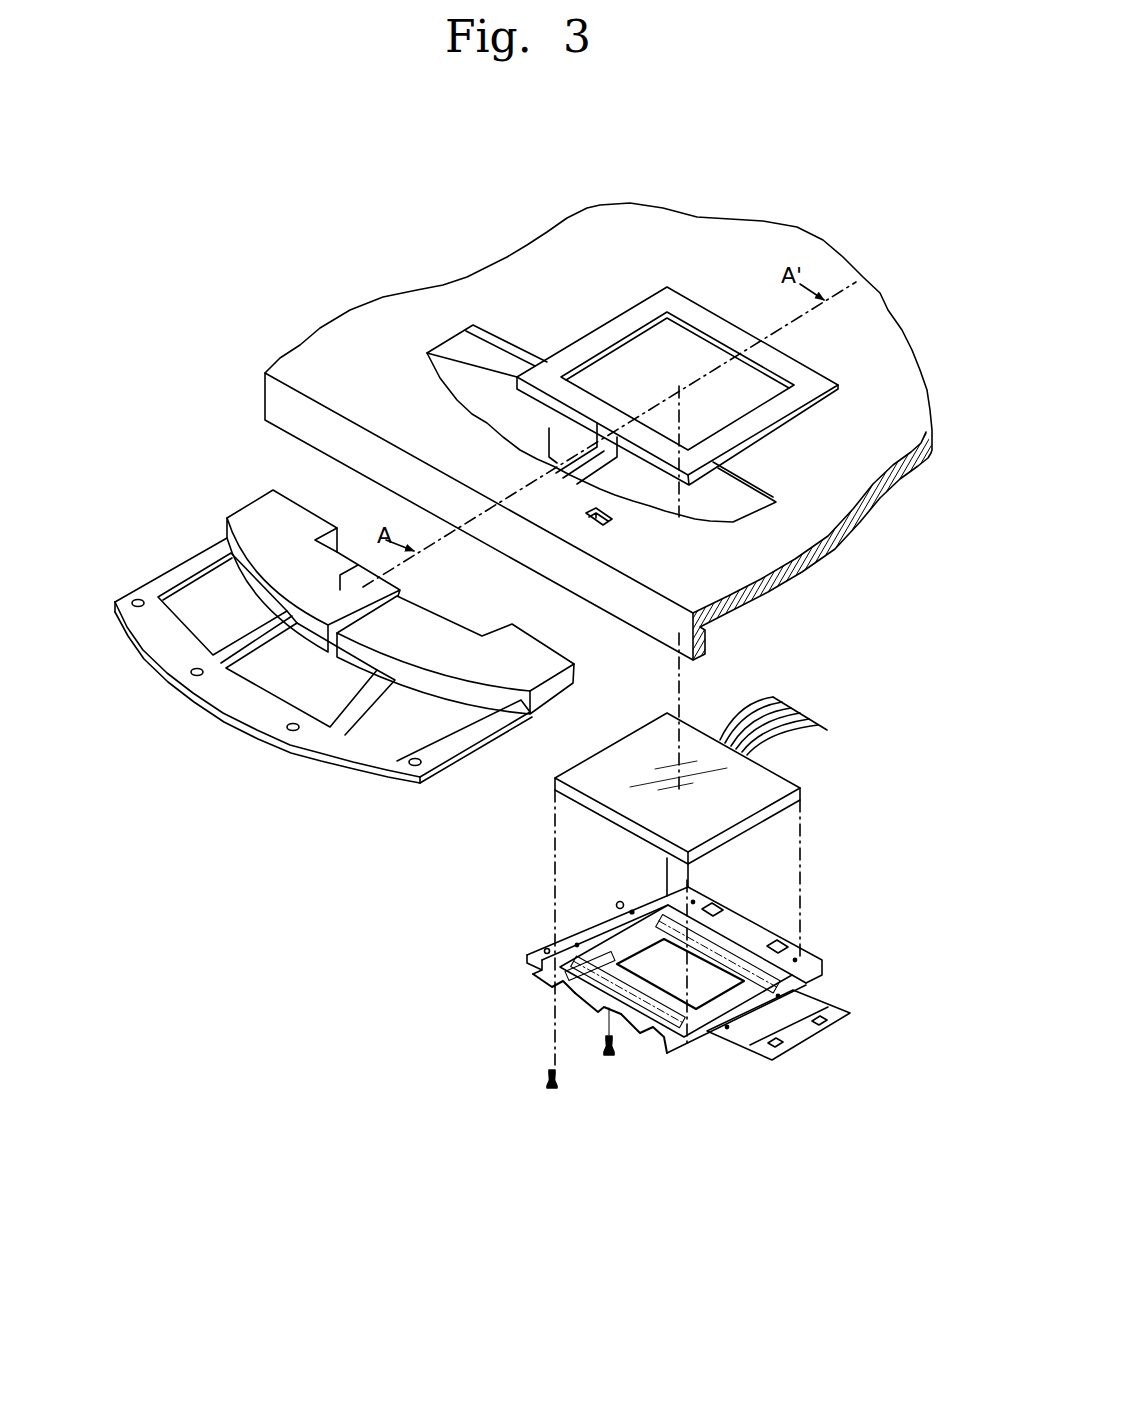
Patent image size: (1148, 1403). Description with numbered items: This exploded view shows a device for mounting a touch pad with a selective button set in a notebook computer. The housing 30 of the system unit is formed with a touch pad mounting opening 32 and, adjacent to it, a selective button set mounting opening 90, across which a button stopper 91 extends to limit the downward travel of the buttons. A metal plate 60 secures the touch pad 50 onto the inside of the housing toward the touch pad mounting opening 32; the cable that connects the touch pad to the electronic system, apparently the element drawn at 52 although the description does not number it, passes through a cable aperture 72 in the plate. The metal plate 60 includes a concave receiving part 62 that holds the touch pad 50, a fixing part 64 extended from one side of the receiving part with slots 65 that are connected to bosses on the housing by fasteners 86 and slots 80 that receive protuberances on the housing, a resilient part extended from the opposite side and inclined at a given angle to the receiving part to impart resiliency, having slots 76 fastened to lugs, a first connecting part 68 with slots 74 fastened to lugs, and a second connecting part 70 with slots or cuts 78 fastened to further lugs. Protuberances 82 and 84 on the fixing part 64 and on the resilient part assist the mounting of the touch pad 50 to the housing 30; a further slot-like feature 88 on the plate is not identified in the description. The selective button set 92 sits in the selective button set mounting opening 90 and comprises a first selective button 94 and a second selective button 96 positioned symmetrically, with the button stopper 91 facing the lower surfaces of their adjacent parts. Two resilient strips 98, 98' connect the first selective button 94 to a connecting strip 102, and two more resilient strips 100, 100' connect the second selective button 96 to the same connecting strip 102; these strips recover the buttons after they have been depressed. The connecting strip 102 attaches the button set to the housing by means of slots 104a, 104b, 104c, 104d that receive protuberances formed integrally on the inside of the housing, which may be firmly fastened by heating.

The housing 30 is at (330, 350).
The touch pad mounting opening 32 is at (626, 356).
The selective button set mounting opening 90 is at (735, 507).
The button stopper 91 is at (600, 465).
The touch pad 50 is at (780, 786).
The flexible cable 52 is at (790, 733).
The metal plate 60 is at (847, 966).
The concave receiving part 62 is at (580, 942).
The fixing part 64 is at (527, 955).
The slots 65 is at (616, 905).
The first connecting part 68 is at (753, 933).
The second connecting part 70 is at (550, 978).
The cable aperture 72 is at (577, 1000).
The slots 74 is at (716, 905).
The slots 76 is at (828, 1023).
The slots or cuts 78 is at (643, 1036).
The slots 80 is at (631, 910).
The protuberance 82 is at (575, 945).
The protuberance 84 is at (725, 1028).
The fasteners 86 is at (552, 1090).
The slot 88 is at (792, 953).
The selective button set 92 is at (290, 780).
The first selective button 94 is at (333, 562).
The second selective button 96 is at (460, 627).
The resilient strip 98 is at (193, 548).
The resilient strip 98' is at (227, 608).
The resilient strip 100 is at (481, 741).
The resilient strip 100' is at (334, 679).
The connecting strip 102 is at (228, 705).
The slot 104a is at (411, 765).
The slot 104b is at (289, 730).
The slot 104c is at (193, 674).
The slot 104d is at (134, 600).